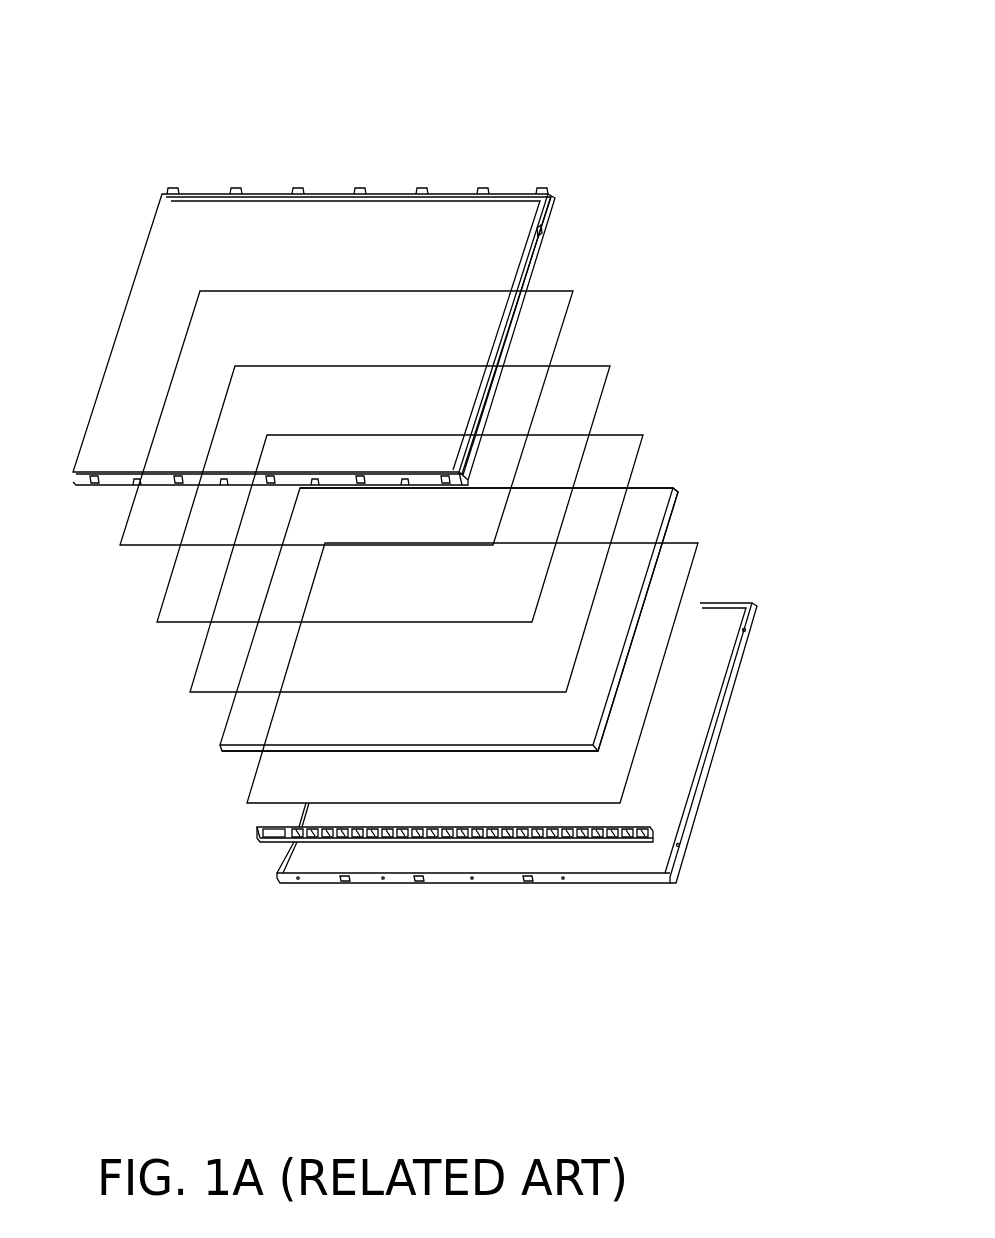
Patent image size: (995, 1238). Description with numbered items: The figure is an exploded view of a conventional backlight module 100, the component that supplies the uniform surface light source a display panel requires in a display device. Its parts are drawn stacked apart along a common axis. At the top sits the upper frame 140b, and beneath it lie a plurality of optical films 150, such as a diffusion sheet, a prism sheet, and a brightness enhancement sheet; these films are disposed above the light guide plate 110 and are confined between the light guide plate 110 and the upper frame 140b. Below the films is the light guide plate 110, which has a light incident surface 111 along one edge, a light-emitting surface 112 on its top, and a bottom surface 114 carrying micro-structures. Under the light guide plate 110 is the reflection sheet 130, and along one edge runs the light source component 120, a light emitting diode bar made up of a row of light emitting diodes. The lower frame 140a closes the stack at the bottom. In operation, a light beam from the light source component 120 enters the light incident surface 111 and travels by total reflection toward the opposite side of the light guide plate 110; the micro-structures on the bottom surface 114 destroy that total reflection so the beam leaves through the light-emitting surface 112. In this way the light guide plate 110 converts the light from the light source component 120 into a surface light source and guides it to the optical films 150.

The backlight module 100 is at (80, 41).
The light guide plate 110 is at (218, 745).
The light incident surface 111 is at (244, 763).
The light-emitting surface 112 is at (646, 513).
The bottom surface 114 is at (662, 628).
The light source component 120 is at (648, 818).
The reflection sheet 130 is at (247, 785).
The lower frame 140a is at (495, 878).
The upper frame 140b is at (546, 192).
The optical films 150 is at (547, 290).